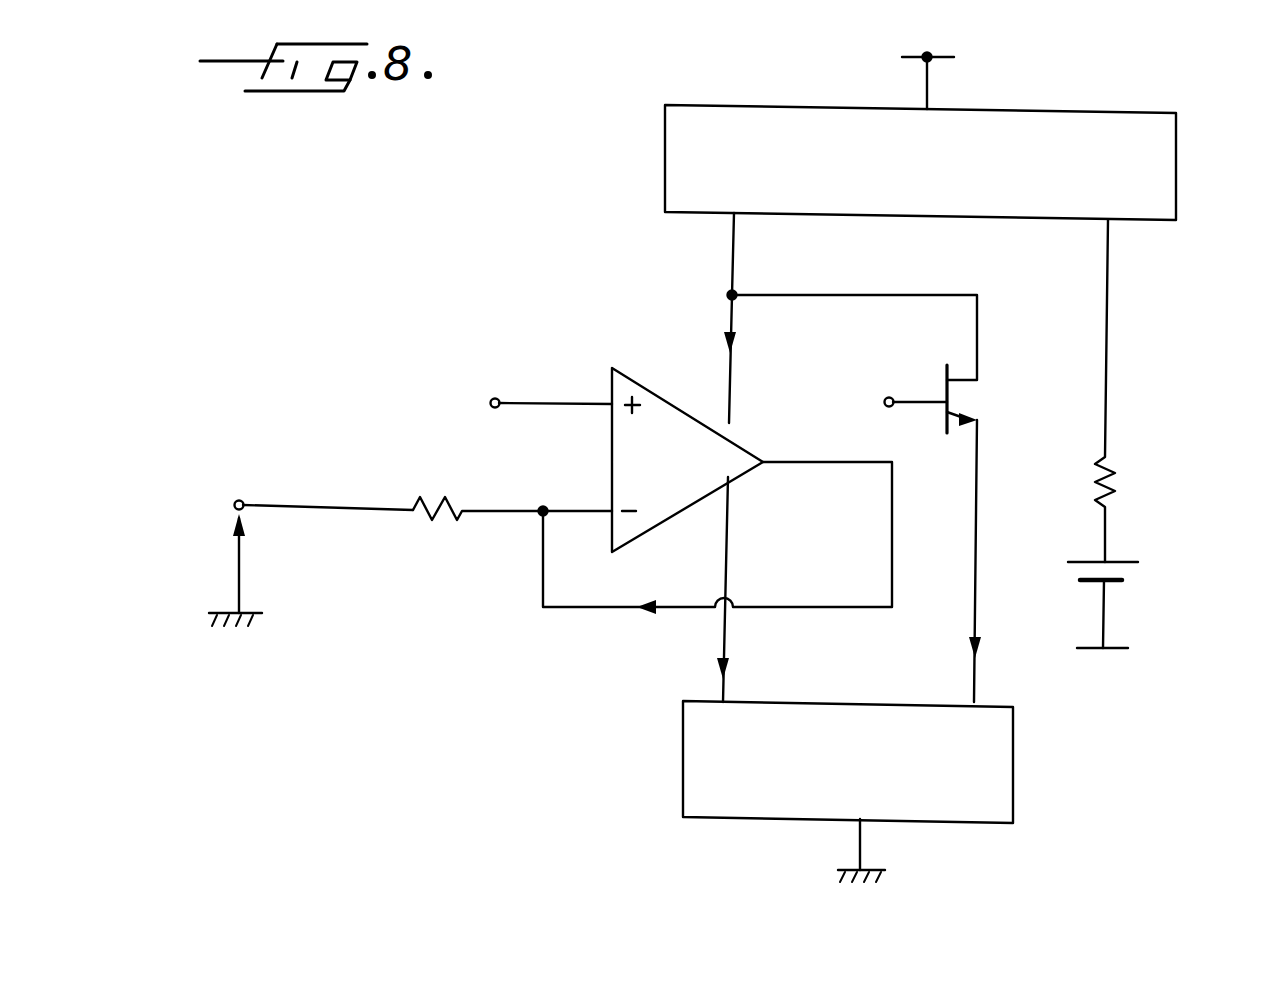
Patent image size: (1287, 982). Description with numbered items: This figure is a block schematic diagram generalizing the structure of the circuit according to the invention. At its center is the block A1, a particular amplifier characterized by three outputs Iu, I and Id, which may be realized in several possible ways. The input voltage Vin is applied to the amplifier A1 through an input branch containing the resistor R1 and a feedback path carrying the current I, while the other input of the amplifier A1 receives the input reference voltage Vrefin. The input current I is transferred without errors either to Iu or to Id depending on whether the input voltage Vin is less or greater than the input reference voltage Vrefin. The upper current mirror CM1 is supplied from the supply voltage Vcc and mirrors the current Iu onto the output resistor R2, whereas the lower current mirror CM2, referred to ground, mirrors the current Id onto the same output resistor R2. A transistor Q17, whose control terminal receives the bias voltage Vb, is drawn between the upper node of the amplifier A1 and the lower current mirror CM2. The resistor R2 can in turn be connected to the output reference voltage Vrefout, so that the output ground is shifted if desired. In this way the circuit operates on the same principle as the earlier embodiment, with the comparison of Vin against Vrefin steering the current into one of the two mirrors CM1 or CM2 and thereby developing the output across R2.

The upper current mirror CM1 is at (1177, 140).
The lower current mirror CM2 is at (1015, 765).
The supply voltage Vcc is at (928, 65).
The upper output current Iu is at (733, 256).
The amplifier A1 is at (635, 375).
The transistor Q17 is at (962, 400).
The bias voltage input Vb is at (888, 398).
The input reference voltage Vrefin is at (494, 400).
The input voltage Vin is at (228, 562).
The input resistor R1 is at (428, 522).
The input current I is at (568, 609).
The lower output current Id is at (723, 647).
The output resistor R2 is at (1122, 482).
The output reference voltage Vrefout is at (1125, 567).